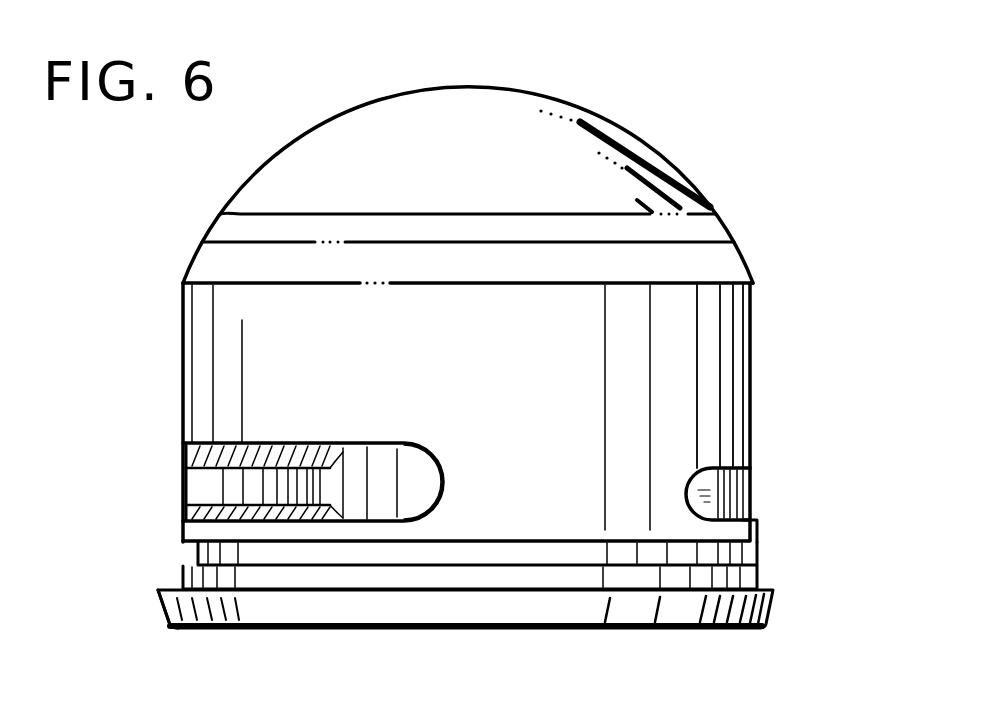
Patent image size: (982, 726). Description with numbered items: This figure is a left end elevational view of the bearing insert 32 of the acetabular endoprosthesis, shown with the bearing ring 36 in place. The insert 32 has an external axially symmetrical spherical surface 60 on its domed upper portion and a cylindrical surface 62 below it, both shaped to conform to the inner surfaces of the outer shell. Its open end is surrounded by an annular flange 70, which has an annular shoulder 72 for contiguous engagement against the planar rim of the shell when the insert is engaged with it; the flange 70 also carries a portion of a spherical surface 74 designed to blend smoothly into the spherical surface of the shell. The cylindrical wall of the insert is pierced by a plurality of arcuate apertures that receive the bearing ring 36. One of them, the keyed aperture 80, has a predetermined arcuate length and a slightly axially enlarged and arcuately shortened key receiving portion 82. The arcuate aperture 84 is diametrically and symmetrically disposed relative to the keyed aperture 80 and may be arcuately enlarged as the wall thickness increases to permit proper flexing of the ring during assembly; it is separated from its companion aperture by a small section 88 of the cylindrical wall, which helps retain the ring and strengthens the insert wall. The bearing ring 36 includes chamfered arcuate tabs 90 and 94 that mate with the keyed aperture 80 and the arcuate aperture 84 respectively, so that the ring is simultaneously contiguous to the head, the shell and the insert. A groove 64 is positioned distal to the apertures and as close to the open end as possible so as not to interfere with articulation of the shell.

The spherical surface 60 is at (240, 180).
The bearing insert 32 is at (202, 242).
The cylindrical surface 62 is at (186, 340).
The small section of the cylindrical wall 88 is at (185, 456).
The chamfered arcuate tab 94 is at (234, 478).
The bearing ring 36 is at (418, 445).
The arcuate aperture 84 is at (444, 488).
The key receiving portion 82 is at (748, 458).
The chamfered arcuate tab 90 is at (751, 483).
The keyed aperture 80 is at (757, 512).
The groove 64 is at (190, 553).
The annular shoulder 72 is at (172, 590).
The annular flange 70 is at (762, 628).
The spherical surface portion of flange 74 is at (166, 614).